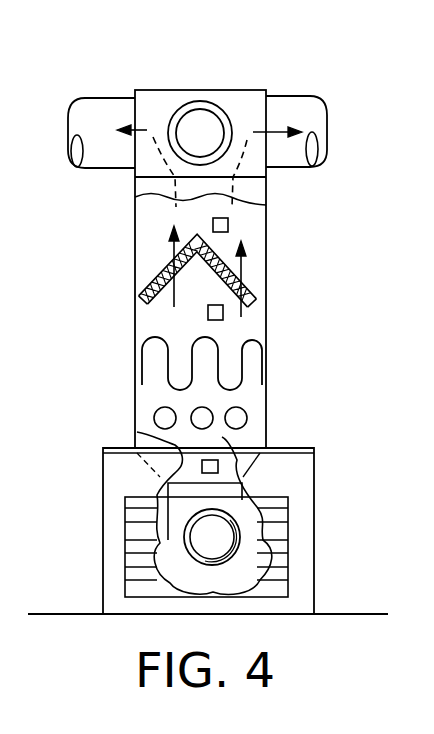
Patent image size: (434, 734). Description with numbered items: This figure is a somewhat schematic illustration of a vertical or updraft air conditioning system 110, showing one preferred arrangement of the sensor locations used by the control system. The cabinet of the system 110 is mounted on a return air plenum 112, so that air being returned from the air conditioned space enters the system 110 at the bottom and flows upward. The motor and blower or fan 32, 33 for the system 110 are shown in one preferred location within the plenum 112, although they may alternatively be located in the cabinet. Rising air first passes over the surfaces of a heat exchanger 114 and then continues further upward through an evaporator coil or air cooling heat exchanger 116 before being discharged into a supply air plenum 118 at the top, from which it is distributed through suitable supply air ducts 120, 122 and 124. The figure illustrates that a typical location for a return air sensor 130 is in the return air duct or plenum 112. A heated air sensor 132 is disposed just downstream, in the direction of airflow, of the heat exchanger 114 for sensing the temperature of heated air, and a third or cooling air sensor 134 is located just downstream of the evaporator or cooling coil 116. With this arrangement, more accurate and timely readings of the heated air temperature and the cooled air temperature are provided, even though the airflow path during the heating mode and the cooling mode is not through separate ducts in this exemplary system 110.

The motor 32 is at (223, 555).
The blower or fan 33 is at (257, 527).
The air conditioning system 110 is at (266, 235).
The return air plenum 112 is at (314, 477).
The heat exchanger 114 is at (240, 363).
The evaporator coil 116 is at (250, 287).
The supply air plenum 118 is at (203, 90).
The supply air duct 120 is at (98, 168).
The supply air duct 122 is at (170, 120).
The supply air duct 124 is at (303, 168).
The return air sensor 130 is at (210, 460).
The heated air sensor 132 is at (208, 312).
The cooling air sensor 134 is at (213, 222).